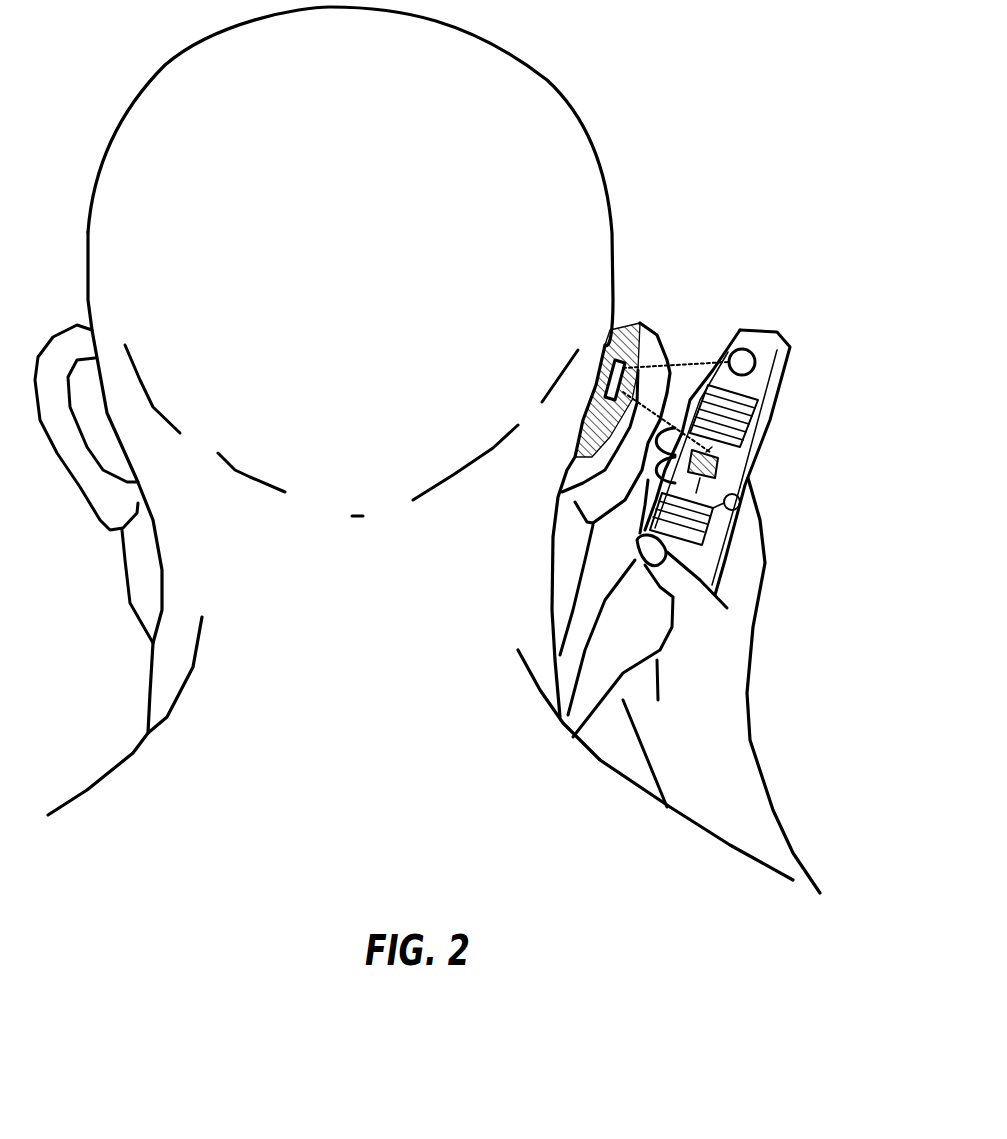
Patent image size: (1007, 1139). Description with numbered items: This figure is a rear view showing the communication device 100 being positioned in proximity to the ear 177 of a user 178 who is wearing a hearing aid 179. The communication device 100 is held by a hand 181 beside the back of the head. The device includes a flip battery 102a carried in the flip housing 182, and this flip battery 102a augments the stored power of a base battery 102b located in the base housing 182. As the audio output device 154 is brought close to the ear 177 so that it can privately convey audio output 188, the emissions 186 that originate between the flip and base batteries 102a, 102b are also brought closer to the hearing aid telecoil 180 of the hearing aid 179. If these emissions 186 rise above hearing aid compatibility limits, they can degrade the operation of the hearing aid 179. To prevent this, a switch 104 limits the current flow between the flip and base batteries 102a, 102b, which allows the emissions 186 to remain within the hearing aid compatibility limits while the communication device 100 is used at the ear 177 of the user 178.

The communication device 100 is at (792, 354).
The flip battery 102a is at (745, 393).
The base battery 102b is at (718, 532).
The switch 104 is at (717, 468).
The audio output device 154 is at (760, 330).
The ear 177 is at (603, 520).
The user 178 is at (590, 134).
The hearing aid 179 is at (637, 320).
The hearing aid telecoil 180 is at (618, 330).
The hand 181 is at (717, 573).
The flip housing 182 is at (792, 337).
The emissions 186 is at (720, 405).
The audio output 188 is at (682, 363).